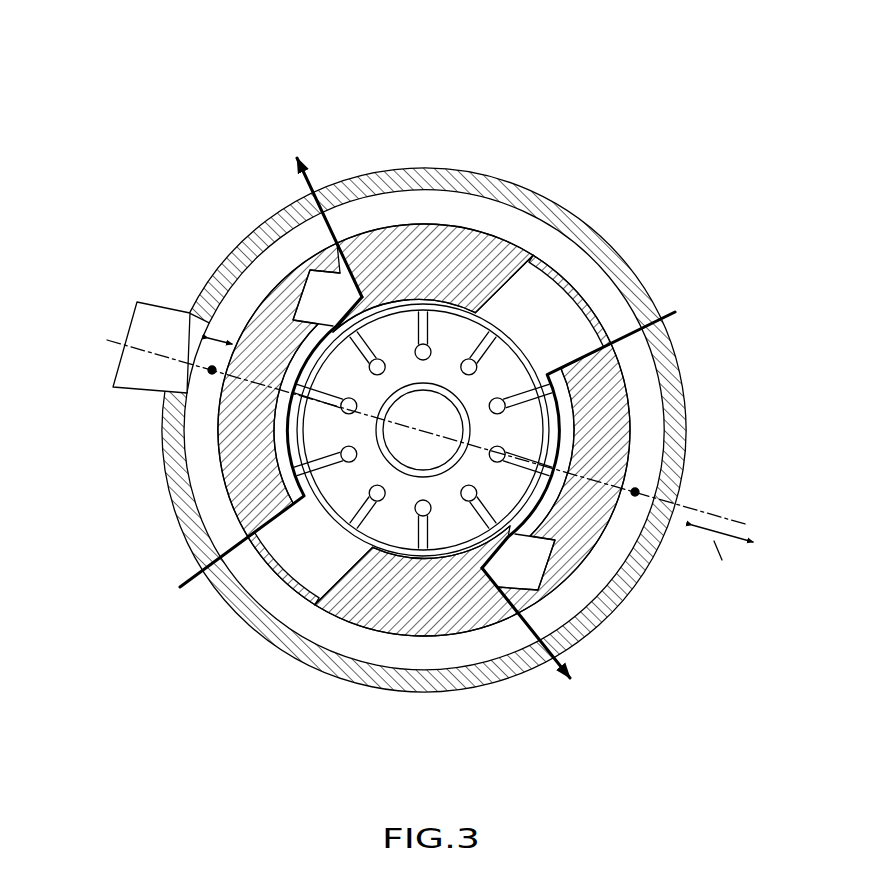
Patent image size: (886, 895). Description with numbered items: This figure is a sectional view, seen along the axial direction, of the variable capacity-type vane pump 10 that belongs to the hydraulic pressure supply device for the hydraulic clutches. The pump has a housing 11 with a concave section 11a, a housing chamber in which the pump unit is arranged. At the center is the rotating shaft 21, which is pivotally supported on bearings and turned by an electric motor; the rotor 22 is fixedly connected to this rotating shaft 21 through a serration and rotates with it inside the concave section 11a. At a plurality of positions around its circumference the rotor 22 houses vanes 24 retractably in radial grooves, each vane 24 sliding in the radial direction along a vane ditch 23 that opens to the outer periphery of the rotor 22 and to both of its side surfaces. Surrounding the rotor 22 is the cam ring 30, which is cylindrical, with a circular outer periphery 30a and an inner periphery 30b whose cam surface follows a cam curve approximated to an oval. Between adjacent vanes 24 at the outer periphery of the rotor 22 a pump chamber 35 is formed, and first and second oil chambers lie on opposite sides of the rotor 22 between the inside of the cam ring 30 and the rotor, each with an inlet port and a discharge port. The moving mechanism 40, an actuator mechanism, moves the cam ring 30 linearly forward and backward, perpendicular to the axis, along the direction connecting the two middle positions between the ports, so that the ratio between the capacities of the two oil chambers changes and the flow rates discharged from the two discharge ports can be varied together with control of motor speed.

The vane pump 10 is at (566, 117).
The housing 11 is at (369, 170).
The concave section 11a is at (342, 206).
The rotating shaft 21 is at (547, 290).
The rotor 22 is at (400, 528).
The vane ditch 23 is at (611, 488).
The vane 24 is at (606, 520).
The cam ring 30 is at (471, 425).
The outer periphery 30a is at (403, 224).
The inner periphery 30b is at (503, 236).
The pump chamber 35 is at (323, 514).
The moving mechanism 40 is at (114, 376).